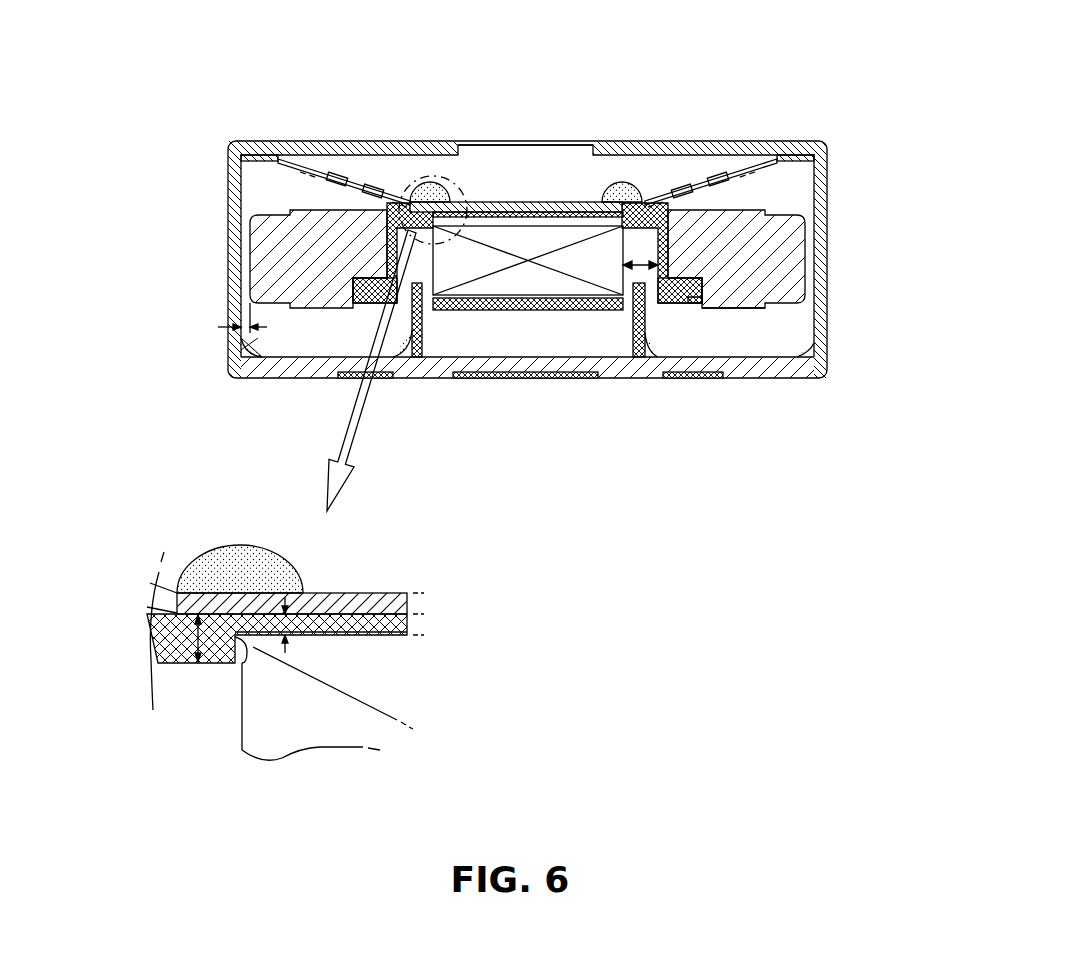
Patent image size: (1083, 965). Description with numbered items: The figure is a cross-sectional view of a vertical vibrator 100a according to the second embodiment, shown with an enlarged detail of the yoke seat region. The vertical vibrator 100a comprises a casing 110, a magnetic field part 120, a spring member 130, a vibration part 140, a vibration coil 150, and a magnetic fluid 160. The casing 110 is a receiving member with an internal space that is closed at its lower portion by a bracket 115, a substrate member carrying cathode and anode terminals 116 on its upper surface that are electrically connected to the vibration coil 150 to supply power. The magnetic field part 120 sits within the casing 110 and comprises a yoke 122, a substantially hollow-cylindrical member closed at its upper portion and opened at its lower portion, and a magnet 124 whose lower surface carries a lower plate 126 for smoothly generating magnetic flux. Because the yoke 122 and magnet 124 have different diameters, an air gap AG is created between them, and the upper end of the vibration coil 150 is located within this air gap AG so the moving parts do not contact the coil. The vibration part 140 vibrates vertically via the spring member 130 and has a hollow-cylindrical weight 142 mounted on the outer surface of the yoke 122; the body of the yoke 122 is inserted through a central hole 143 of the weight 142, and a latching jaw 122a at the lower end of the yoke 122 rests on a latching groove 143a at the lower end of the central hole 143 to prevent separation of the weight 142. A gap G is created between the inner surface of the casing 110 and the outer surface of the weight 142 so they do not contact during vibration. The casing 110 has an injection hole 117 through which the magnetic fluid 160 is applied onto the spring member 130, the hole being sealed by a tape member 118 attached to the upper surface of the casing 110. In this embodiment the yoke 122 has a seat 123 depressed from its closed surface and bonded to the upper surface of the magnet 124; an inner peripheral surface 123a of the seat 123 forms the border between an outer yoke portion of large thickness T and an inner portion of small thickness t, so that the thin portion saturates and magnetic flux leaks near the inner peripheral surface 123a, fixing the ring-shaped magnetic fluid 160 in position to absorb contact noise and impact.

The vertical vibrator 100a is at (790, 83).
The casing 110 is at (232, 185).
The bracket 115 is at (765, 378).
The cathode and anode terminals 116 is at (388, 378).
The injection hole 117 is at (580, 141).
The tape member 118 is at (295, 141).
The magnetic field part 120 is at (668, 190).
The yoke 122 is at (650, 203).
The latching jaw 122a is at (692, 303).
The seat 123 is at (515, 212).
The inner peripheral surface 123a is at (242, 665).
The magnet 124 is at (553, 235).
The lower plate 126 is at (540, 310).
The spring member 130 is at (374, 176).
The vibration part 140 is at (256, 344).
The weight 142 is at (262, 255).
The central hole 143 is at (667, 243).
The latching groove 143a is at (773, 306).
The vibration coil 150 is at (640, 338).
The magnetic fluid 160 is at (432, 184).
The gap G is at (235, 317).
The air gap AG is at (640, 255).
The large thickness T is at (190, 638).
The small thickness t is at (291, 629).